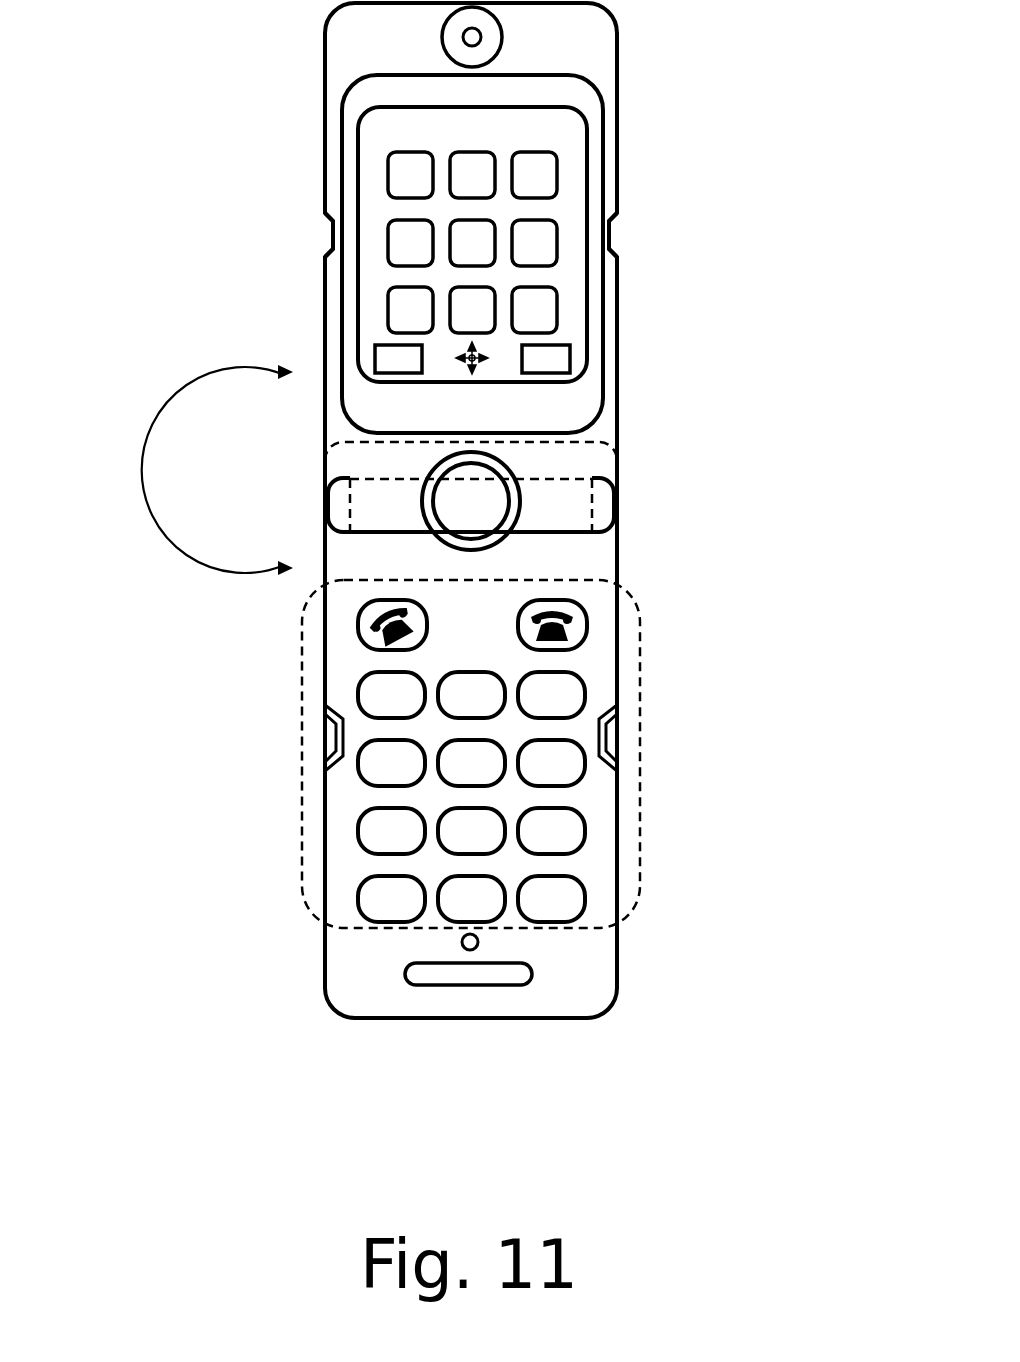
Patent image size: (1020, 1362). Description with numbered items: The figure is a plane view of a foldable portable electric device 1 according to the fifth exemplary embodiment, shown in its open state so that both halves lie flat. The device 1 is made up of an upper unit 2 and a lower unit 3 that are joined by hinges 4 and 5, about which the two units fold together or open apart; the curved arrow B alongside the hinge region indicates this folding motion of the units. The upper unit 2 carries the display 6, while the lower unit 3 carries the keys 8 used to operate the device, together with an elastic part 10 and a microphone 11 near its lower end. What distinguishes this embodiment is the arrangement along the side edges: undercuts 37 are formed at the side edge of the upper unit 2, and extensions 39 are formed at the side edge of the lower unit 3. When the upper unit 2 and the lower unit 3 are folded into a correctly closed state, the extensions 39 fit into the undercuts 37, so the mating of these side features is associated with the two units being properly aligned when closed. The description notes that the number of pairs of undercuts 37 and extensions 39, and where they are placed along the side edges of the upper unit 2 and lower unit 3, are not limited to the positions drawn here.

The foldable electric device 1 is at (645, 181).
The upper unit 2 is at (608, 308).
The lower unit 3 is at (597, 606).
The hinge 4 is at (567, 505).
The hinge 5 is at (472, 505).
The display 6 is at (349, 297).
The keys 8 is at (641, 830).
The elastic part 10 is at (453, 974).
The microphone 11 is at (477, 948).
The undercuts 37 is at (325, 233).
The extensions 39 is at (326, 738).
The rotation direction B is at (158, 428).